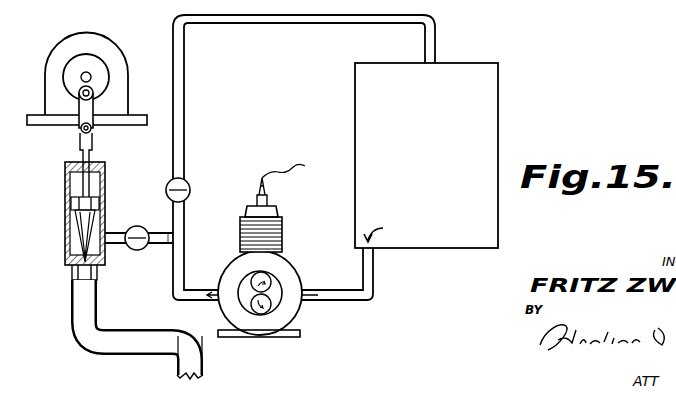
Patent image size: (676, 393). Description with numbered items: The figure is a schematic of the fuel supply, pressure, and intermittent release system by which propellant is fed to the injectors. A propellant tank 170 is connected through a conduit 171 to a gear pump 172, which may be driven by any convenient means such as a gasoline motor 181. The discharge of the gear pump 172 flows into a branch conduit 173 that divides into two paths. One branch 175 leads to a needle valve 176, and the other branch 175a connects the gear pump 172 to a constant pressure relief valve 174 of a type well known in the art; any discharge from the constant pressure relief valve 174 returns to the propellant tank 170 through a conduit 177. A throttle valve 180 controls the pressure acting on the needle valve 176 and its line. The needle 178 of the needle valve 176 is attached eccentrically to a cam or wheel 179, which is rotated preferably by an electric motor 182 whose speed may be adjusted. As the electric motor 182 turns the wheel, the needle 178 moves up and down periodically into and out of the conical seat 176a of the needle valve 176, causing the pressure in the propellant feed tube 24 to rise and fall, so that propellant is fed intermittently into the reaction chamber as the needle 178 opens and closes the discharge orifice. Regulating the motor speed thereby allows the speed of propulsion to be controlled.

The propellant tank 170 is at (499, 125).
The conduit 171 is at (373, 277).
The gear pump 172 is at (275, 308).
The branch conduit 173 is at (183, 250).
The constant pressure relief valve 174 is at (190, 185).
The branch 175 is at (122, 245).
The branch 175a is at (172, 212).
The needle valve 176 is at (65, 185).
The conical seat 176a is at (67, 277).
The conduit 177 is at (185, 60).
The needle 178 is at (80, 230).
The cam or wheel 179 is at (74, 66).
The throttle valve 180 is at (155, 205).
The gasoline motor 181 is at (288, 265).
The electric motor 182 is at (146, 22).
The propellant feed tube 24 is at (205, 357).